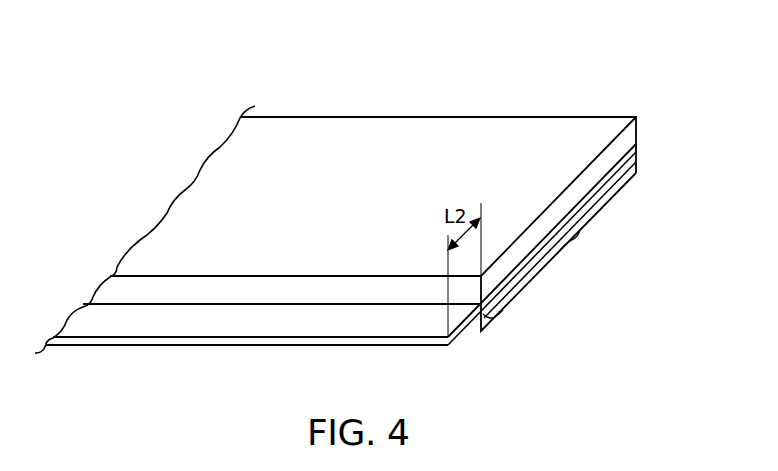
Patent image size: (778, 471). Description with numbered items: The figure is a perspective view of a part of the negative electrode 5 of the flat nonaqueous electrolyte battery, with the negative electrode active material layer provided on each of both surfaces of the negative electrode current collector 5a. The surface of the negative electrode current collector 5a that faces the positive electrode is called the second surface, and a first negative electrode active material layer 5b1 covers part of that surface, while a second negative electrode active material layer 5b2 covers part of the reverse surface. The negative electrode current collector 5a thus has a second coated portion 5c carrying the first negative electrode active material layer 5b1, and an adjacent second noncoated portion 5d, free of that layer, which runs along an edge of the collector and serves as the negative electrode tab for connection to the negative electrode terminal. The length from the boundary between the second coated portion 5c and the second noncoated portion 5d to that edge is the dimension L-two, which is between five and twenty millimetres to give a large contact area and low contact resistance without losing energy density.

The negative electrode 5 is at (382, 198).
The negative electrode current collector 5a is at (637, 147).
The first negative electrode active material layer 5b1 is at (637, 122).
The second negative electrode active material layer 5b2 is at (637, 168).
The second coated portion 5c is at (566, 247).
The second noncoated portion 5d is at (448, 340).